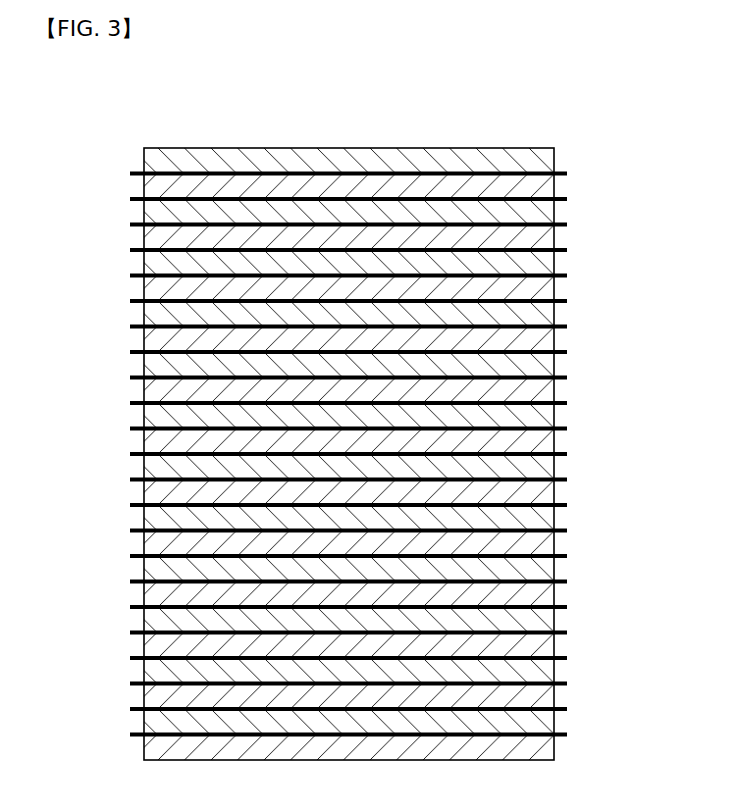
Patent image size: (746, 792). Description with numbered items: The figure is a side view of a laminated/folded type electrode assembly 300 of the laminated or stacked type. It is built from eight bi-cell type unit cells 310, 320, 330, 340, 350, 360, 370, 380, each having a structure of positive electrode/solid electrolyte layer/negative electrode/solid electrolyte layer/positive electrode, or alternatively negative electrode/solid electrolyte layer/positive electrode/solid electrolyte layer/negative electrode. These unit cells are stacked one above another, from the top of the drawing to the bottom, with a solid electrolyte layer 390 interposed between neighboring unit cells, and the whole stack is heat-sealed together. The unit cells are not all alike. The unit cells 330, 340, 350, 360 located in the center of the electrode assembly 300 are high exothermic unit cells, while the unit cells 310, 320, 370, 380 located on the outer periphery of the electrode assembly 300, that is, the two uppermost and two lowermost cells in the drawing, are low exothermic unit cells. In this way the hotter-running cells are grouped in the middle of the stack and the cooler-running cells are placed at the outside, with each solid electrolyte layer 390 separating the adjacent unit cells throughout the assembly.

The electrode assembly 300 is at (130, 126).
The unit cell 310 is at (578, 149).
The unit cell 320 is at (578, 226).
The unit cell 330 is at (578, 302).
The unit cell 340 is at (578, 378).
The unit cell 350 is at (578, 455).
The unit cell 360 is at (578, 532).
The unit cell 370 is at (578, 608).
The unit cell 380 is at (578, 684).
The solid electrolyte layer 390 is at (141, 683).